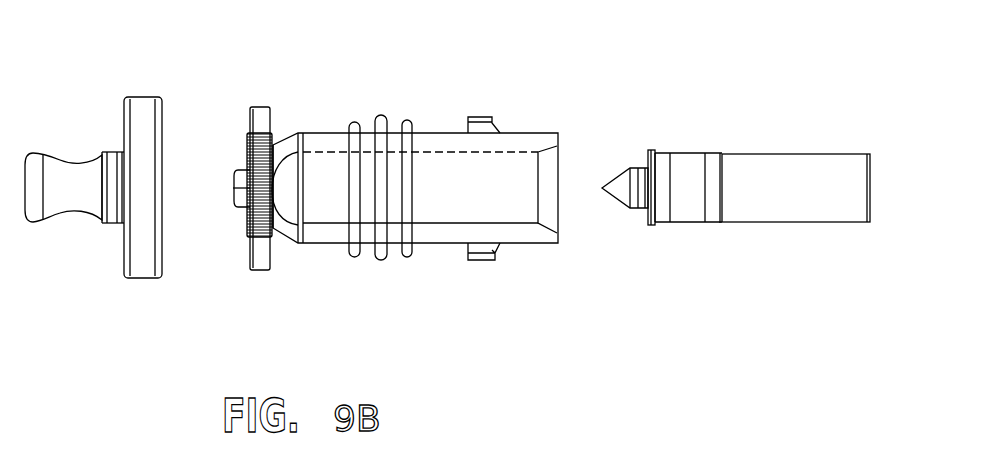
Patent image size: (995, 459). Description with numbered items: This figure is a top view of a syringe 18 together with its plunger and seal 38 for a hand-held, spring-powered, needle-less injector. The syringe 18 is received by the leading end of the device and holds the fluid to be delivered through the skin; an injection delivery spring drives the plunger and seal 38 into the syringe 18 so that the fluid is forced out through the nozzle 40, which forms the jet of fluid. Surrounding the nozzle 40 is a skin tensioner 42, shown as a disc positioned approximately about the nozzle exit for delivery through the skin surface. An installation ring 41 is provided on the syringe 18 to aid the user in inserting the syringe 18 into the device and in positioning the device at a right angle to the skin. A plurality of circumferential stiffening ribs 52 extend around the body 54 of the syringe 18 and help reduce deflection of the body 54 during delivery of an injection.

The syringe 18 is at (490, 282).
The plunger and seal 38 is at (787, 222).
The nozzle 40 is at (236, 165).
The installation ring 41 is at (142, 265).
The skin tensioner 42 is at (270, 107).
The circumferential stiffening ribs 52 is at (355, 120).
The body 54 is at (447, 130).